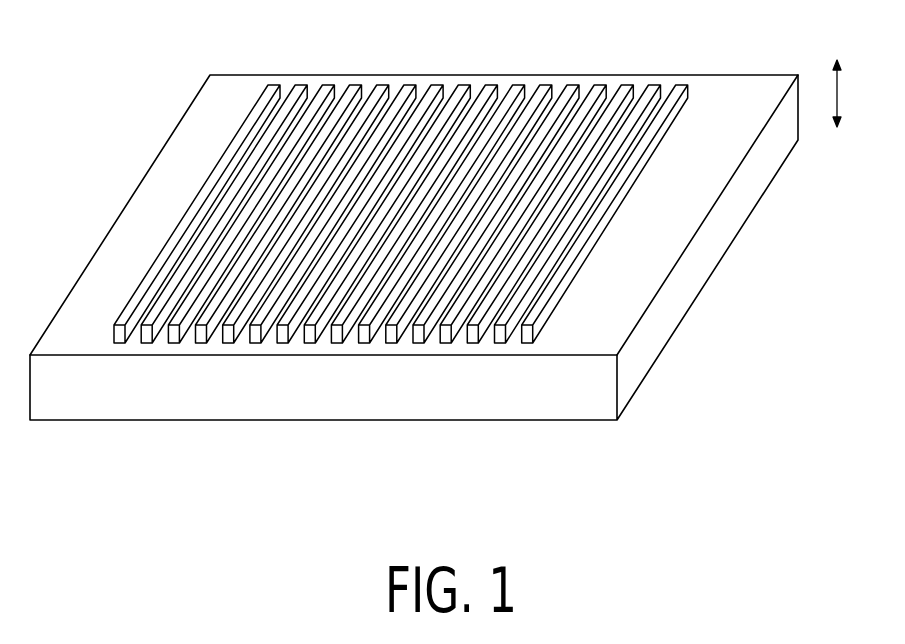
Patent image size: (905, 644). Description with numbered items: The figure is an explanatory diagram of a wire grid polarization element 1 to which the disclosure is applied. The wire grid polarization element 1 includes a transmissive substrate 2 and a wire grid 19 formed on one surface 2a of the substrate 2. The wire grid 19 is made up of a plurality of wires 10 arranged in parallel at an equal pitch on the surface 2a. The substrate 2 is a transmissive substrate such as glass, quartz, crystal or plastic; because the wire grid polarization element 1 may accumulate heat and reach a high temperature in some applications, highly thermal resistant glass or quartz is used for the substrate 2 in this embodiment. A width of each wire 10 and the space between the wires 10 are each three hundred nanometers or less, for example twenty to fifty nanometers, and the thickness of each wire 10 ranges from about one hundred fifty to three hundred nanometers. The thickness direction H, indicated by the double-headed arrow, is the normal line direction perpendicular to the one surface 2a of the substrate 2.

The wire grid polarization element 1 is at (153, 100).
The substrate 2 is at (541, 400).
The one surface of the substrate 2a is at (618, 300).
The wire 10 is at (226, 338).
The wire grid 19 is at (210, 460).
The thickness direction H is at (852, 93).